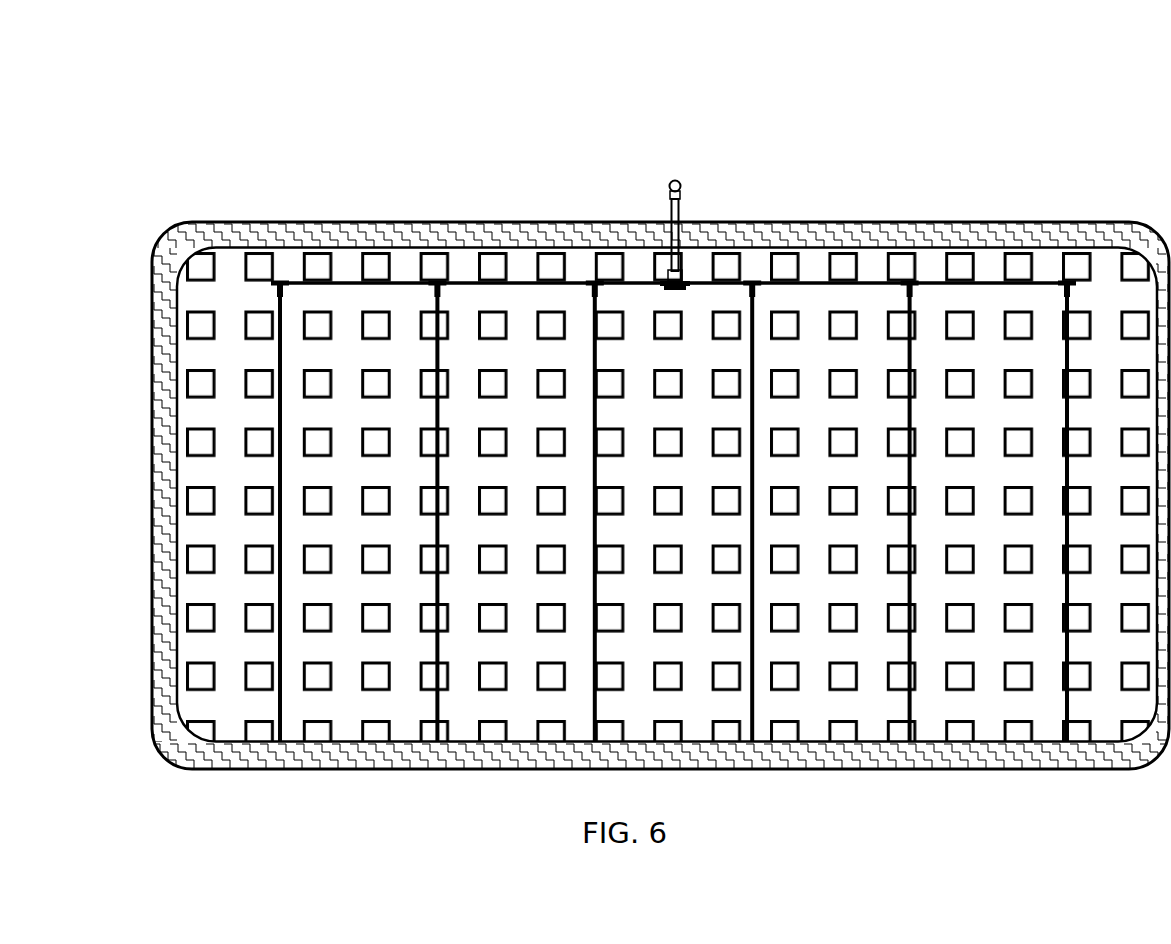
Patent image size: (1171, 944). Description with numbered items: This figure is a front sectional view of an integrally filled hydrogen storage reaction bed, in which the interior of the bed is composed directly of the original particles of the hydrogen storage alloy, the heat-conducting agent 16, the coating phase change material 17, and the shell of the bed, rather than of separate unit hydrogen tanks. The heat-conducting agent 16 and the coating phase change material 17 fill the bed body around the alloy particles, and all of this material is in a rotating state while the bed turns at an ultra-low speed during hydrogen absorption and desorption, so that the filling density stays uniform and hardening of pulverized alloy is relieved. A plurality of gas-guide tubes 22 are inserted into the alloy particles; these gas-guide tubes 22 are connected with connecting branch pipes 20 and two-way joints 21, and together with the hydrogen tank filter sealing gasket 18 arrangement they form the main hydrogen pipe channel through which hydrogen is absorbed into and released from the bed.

The heat-conducting agent 16 is at (428, 265).
The coating phase change material 17 is at (522, 322).
The hydrogen tank filter sealing gasket 18 is at (755, 282).
The connecting branch pipe 20 is at (990, 283).
The two-way joint 21 is at (1067, 283).
The gas-guide tube 22 is at (280, 417).